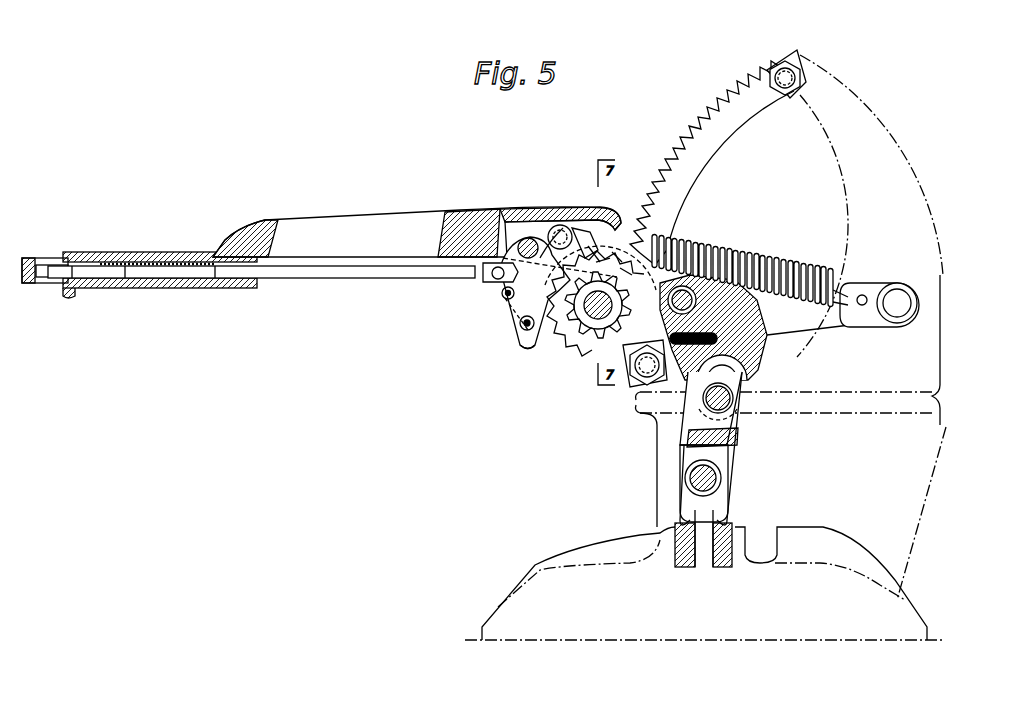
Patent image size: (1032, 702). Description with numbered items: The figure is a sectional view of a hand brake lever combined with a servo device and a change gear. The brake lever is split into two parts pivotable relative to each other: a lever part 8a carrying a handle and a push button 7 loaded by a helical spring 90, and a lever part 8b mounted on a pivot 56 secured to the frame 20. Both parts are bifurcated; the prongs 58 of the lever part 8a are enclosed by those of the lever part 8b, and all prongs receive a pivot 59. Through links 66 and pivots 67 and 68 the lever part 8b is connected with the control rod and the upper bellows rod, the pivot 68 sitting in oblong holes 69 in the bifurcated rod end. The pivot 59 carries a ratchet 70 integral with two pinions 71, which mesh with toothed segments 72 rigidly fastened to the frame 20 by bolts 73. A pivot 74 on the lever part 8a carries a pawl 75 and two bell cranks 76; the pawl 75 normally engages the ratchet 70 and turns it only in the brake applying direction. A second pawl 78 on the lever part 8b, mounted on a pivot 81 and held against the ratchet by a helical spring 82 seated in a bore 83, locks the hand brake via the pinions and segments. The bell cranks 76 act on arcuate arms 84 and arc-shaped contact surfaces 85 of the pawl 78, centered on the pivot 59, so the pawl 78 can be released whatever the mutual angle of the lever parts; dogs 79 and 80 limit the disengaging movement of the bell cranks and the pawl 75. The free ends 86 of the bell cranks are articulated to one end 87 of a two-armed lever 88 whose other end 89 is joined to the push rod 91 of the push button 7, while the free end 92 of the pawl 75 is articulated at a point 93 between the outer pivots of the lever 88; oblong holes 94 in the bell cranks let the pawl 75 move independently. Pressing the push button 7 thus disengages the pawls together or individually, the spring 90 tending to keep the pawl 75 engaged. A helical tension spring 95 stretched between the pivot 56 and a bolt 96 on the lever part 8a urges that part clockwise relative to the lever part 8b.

The push button 7 is at (34, 257).
The helical spring 90 is at (134, 256).
The push rod 91 is at (305, 275).
The lever part 8a is at (285, 230).
The lever part 8b is at (857, 270).
The frame 20 is at (917, 232).
The pivot 56 is at (900, 303).
The prongs 58 is at (537, 320).
The pivot 59 is at (566, 287).
The links 66 is at (740, 430).
The pivot 67 is at (724, 404).
The pivot 68 is at (712, 486).
The oblong holes 69 is at (730, 468).
The ratchet 70 is at (583, 332).
The pinions 71 is at (594, 320).
The toothed segments 72 is at (695, 120).
The bolts 73 is at (770, 70).
The pivot 74 is at (524, 240).
The pawl 75 is at (583, 250).
The bell cranks 76 is at (595, 260).
The pawl 78 is at (628, 352).
The dog 79 is at (615, 255).
The dog 80 is at (591, 243).
The pivot 81 is at (698, 304).
The helical spring 82 is at (750, 350).
The bore 83 is at (720, 339).
The arcuate arms 84 is at (622, 267).
The contact surfaces 85 is at (556, 226).
The free ends 86 is at (526, 340).
The end 87 is at (520, 326).
The two-armed lever 88 is at (517, 313).
The end 89 is at (500, 289).
The free end 92 is at (498, 297).
The point 93 is at (504, 302).
The oblong holes 94 is at (513, 308).
The helical tension spring 95 is at (724, 245).
The bolt 96 is at (561, 227).